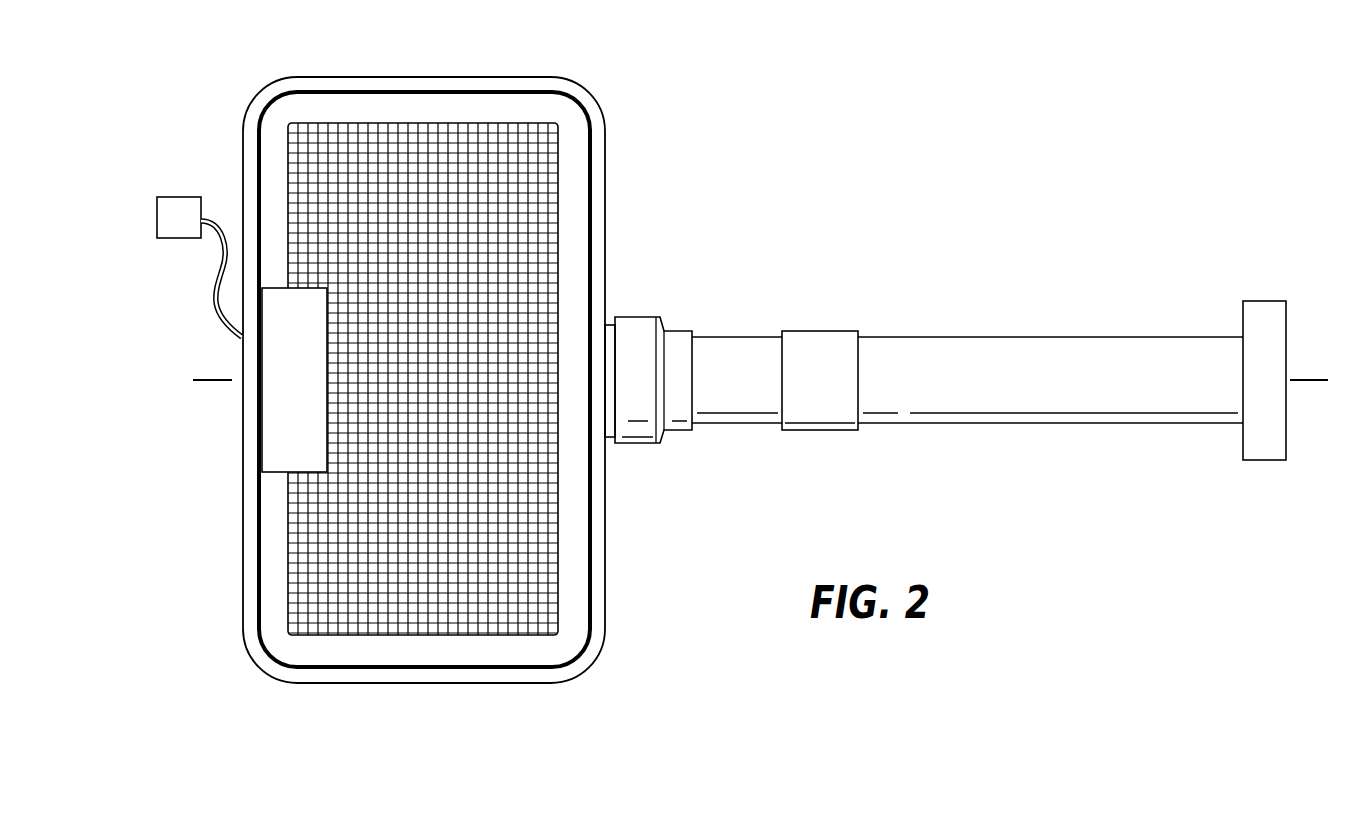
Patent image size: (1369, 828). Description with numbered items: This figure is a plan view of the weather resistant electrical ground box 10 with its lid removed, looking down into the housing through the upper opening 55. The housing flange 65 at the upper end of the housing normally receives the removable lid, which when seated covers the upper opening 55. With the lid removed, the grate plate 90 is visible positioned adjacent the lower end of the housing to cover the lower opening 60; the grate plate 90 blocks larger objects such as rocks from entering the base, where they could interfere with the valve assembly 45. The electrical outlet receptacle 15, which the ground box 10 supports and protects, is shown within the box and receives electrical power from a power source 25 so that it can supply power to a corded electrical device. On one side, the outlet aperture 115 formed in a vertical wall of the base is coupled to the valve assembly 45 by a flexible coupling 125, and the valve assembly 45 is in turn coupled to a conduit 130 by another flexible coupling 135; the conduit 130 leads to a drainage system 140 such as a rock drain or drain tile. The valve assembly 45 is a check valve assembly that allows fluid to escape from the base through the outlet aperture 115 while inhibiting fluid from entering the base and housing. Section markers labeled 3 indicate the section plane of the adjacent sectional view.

The electrical ground box 10 is at (975, 125).
The electrical outlet receptacle 15 is at (277, 474).
The power source 25 is at (178, 196).
The valve assembly 45 is at (731, 347).
The upper opening 55 is at (572, 152).
The lower opening 60 is at (530, 540).
The housing flange 65 is at (383, 676).
The grate plate 90 is at (448, 148).
The outlet aperture 115 is at (611, 327).
The flexible coupling 125 is at (640, 428).
The conduit 130 is at (1078, 344).
The flexible coupling 135 is at (826, 345).
The drainage system 140 is at (1265, 300).
The section line 3- 3 is at (212, 386).